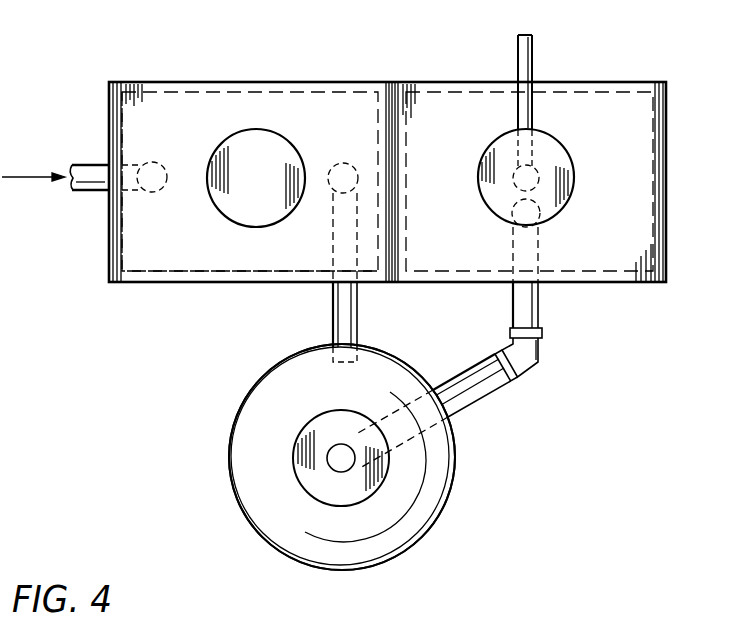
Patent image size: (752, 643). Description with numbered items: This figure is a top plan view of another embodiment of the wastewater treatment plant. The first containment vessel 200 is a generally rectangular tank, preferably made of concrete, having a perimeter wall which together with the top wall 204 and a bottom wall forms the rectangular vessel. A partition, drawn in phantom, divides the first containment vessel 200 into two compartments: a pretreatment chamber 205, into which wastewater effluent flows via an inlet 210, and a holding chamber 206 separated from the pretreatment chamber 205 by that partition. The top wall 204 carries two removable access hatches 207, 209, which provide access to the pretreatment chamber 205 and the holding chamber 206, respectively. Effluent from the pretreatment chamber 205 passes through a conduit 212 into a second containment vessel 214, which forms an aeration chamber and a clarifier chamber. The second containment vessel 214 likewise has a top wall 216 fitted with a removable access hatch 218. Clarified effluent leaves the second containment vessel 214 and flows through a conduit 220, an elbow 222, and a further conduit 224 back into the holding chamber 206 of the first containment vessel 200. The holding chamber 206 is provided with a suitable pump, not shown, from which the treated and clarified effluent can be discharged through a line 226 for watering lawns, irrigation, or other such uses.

The first containment vessel 200 is at (362, 72).
The top wall 204 is at (181, 113).
The pretreatment chamber 205 is at (153, 265).
The holding chamber 206 is at (585, 273).
The removable access hatch 207 is at (253, 147).
The removable access hatch 209 is at (562, 164).
The inlet 210 is at (83, 168).
The conduit 212 is at (333, 312).
The second containment vessel 214 is at (462, 498).
The top wall 216 is at (243, 433).
The removable access hatch 218 is at (310, 483).
The conduit 220 is at (477, 392).
The elbow 222 is at (537, 362).
The conduit 224 is at (540, 318).
The line 226 is at (533, 51).